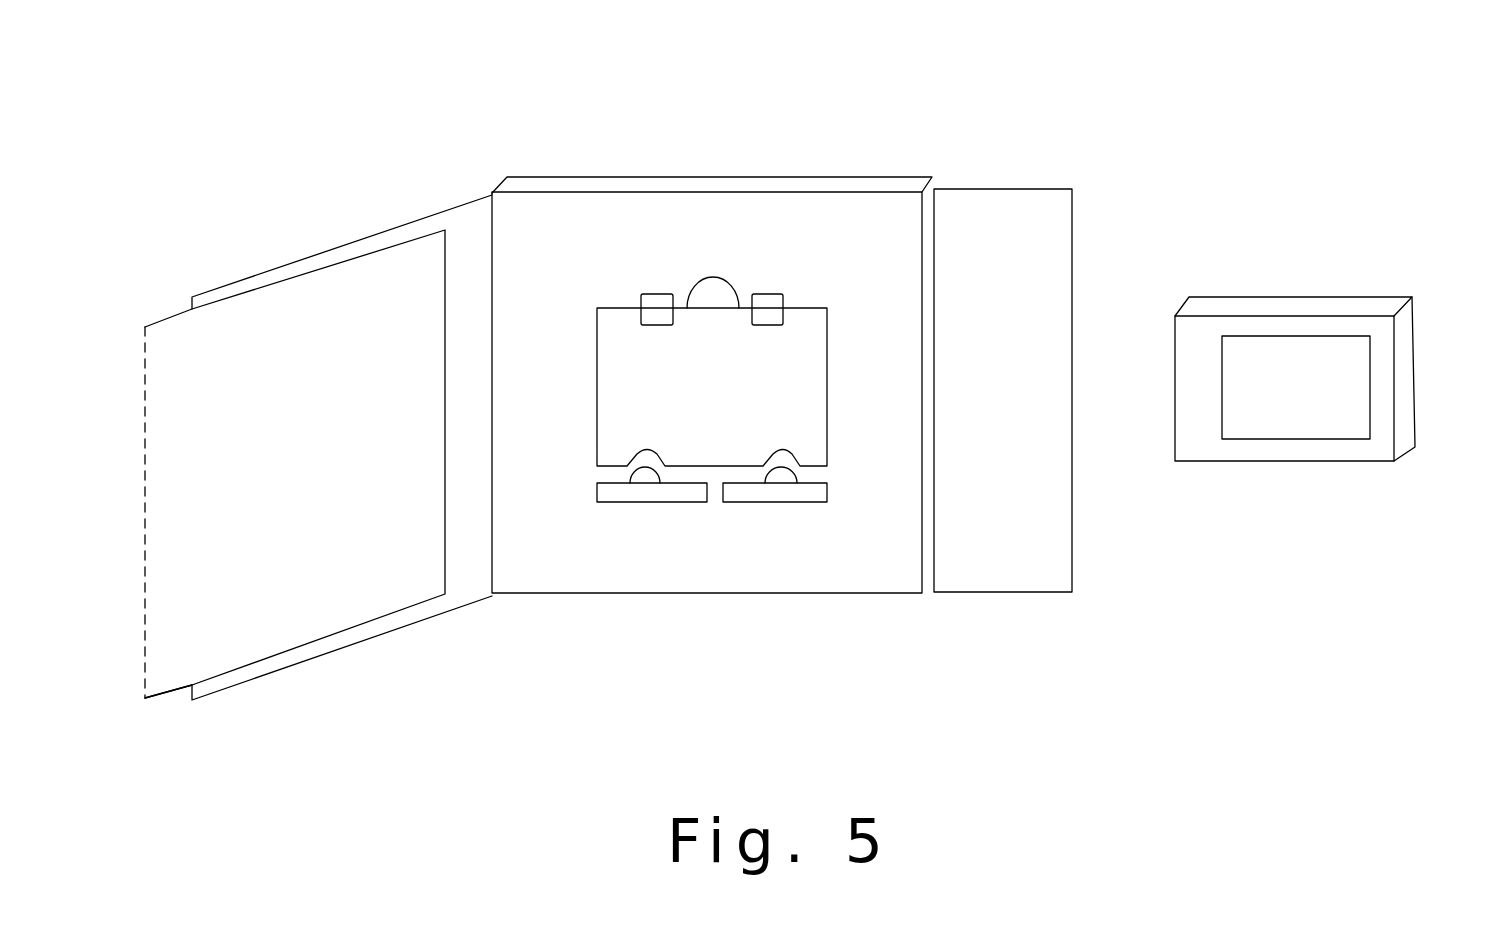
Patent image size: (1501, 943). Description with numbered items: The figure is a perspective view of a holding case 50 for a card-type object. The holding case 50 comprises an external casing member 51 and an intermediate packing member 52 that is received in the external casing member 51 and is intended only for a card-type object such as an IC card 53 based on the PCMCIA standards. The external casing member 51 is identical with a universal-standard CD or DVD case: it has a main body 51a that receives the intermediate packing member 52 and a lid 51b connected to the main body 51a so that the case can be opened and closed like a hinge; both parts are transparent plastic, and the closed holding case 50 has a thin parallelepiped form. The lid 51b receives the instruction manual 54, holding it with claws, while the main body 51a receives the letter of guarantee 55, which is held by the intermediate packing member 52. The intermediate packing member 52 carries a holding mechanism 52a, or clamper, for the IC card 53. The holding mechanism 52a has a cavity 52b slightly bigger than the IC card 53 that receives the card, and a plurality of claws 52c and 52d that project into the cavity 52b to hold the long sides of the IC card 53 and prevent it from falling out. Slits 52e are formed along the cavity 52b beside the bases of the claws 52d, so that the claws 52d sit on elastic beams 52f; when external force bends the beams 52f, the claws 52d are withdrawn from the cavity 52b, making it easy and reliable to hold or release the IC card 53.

The holding case 50 is at (664, 146).
The external casing member 51 is at (598, 105).
The main body 51a is at (547, 177).
The lid 51b is at (447, 208).
The intermediate packing member 52 is at (647, 577).
The holding mechanism 52a is at (602, 260).
The cavity 52b is at (597, 357).
The claws 52c is at (675, 317).
The claws 52d is at (642, 452).
The slits 52e is at (697, 502).
The elastic beams 52f is at (740, 478).
The IC card 53 is at (1408, 369).
The instruction manual 54 is at (177, 689).
The letter of guarantee 55 is at (1060, 510).